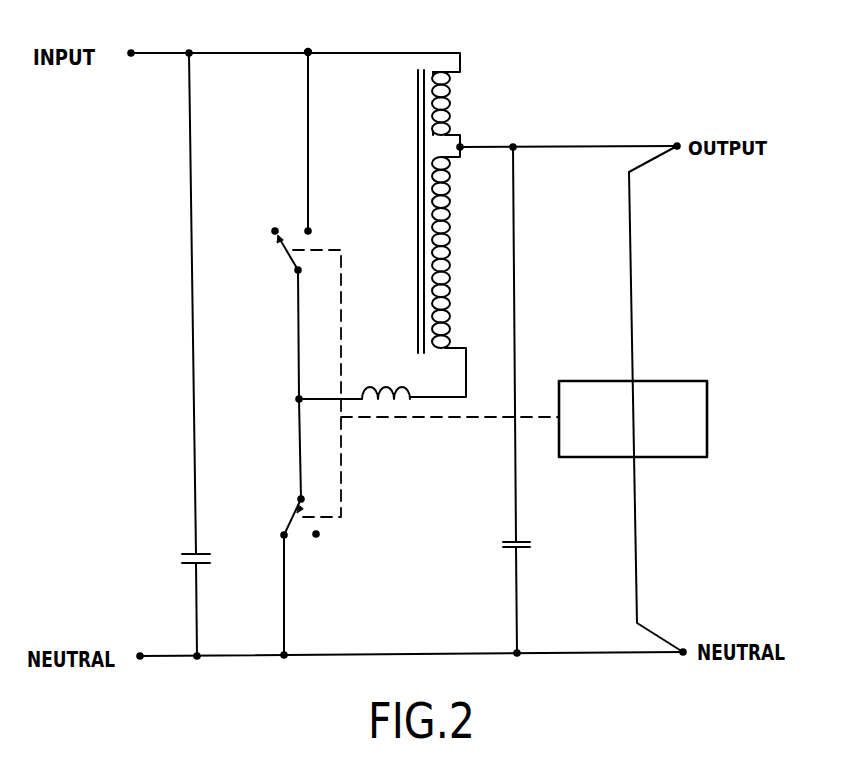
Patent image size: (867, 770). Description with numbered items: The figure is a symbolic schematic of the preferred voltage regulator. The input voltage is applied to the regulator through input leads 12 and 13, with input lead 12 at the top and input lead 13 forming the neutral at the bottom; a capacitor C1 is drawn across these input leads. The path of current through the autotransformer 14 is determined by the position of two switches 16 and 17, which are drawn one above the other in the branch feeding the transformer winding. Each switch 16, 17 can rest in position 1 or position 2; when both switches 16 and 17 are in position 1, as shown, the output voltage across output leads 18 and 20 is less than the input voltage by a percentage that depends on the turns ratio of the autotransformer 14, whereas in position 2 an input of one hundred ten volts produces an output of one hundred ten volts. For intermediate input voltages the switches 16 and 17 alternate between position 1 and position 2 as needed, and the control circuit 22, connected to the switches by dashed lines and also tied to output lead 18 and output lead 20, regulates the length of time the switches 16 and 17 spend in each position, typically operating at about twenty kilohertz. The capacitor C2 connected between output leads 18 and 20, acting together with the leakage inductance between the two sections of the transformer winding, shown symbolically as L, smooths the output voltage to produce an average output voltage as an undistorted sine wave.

The input lead 12 is at (295, 48).
The input lead 13 is at (411, 672).
The autotransformer 14 is at (426, 233).
The switch 16 is at (283, 225).
The switch 17 is at (287, 527).
The output lead 18 is at (591, 146).
The output lead 20 is at (603, 653).
The control circuit 22 is at (667, 381).
The switch position 1 is at (261, 381).
The switch position 2 is at (336, 385).
The capacitor C1 is at (181, 553).
The capacitor C2 is at (524, 541).
The leakage inductance L is at (354, 379).